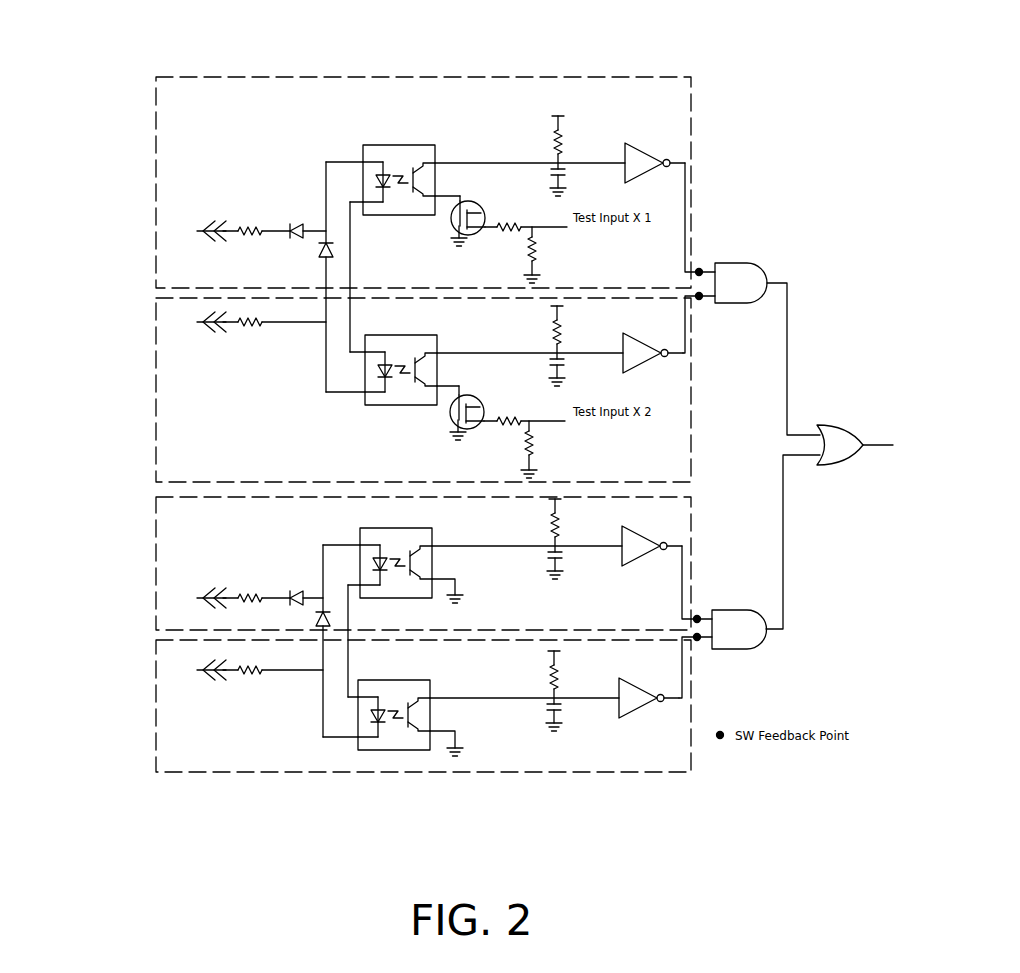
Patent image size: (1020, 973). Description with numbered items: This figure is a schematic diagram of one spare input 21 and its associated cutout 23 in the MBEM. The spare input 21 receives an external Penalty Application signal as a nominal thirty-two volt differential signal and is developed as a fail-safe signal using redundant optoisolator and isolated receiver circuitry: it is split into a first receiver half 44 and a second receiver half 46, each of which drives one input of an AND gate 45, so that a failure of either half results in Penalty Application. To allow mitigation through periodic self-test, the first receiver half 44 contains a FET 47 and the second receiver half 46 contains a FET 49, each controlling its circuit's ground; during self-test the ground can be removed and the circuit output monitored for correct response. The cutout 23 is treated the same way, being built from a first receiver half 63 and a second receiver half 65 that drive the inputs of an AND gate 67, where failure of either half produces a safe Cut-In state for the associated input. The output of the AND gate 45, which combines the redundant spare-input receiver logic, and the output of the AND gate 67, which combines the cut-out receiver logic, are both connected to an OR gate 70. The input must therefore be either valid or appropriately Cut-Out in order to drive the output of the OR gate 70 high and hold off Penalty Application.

The spare input 21 is at (75, 263).
The cutout 23 is at (63, 580).
The first receiver half 44 is at (470, 77).
The AND gate 45 is at (735, 262).
The second receiver half 46 is at (156, 372).
The FET 47 is at (465, 203).
The FET 49 is at (466, 397).
The first receiver half 63 is at (691, 530).
The second receiver half 65 is at (691, 716).
The AND gate 67 is at (750, 610).
The OR gate 70 is at (832, 425).